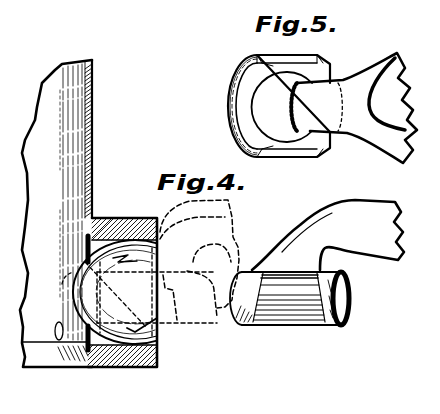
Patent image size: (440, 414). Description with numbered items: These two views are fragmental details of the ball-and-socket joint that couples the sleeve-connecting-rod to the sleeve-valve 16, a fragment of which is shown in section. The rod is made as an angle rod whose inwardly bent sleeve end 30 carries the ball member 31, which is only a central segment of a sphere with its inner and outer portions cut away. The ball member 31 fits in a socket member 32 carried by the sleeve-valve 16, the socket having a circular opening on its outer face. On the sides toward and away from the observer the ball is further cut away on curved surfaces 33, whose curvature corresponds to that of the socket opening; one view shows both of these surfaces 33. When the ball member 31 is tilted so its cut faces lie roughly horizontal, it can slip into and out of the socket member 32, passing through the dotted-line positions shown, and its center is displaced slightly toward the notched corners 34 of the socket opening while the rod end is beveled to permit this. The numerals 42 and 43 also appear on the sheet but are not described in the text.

In FIG. 4, the supporting wall or board 16 is at (93, 150).
In FIG. 4, the flexible tube 30 is at (321, 210).
In FIG. 5, the flexible tube 30 is at (362, 137).
In FIG. 4, the lamp bulb casing 31 is at (349, 311).
In FIG. 5, the lamp bulb casing 31 is at (229, 100).
In FIG. 4, the bracket 32 is at (108, 368).
In FIG. 4, the cylindrical lamp bulb 33 is at (303, 318).
In FIG. 5, the cylindrical lamp bulb 33 is at (312, 55).
In FIG. 4, the lamp filament/connection 34 is at (127, 328).
In FIG. 5, the element 42 (partially shown) 42 is at (180, 0).
In FIG. 5, the element 43 (partially shown) 43 is at (434, 10).